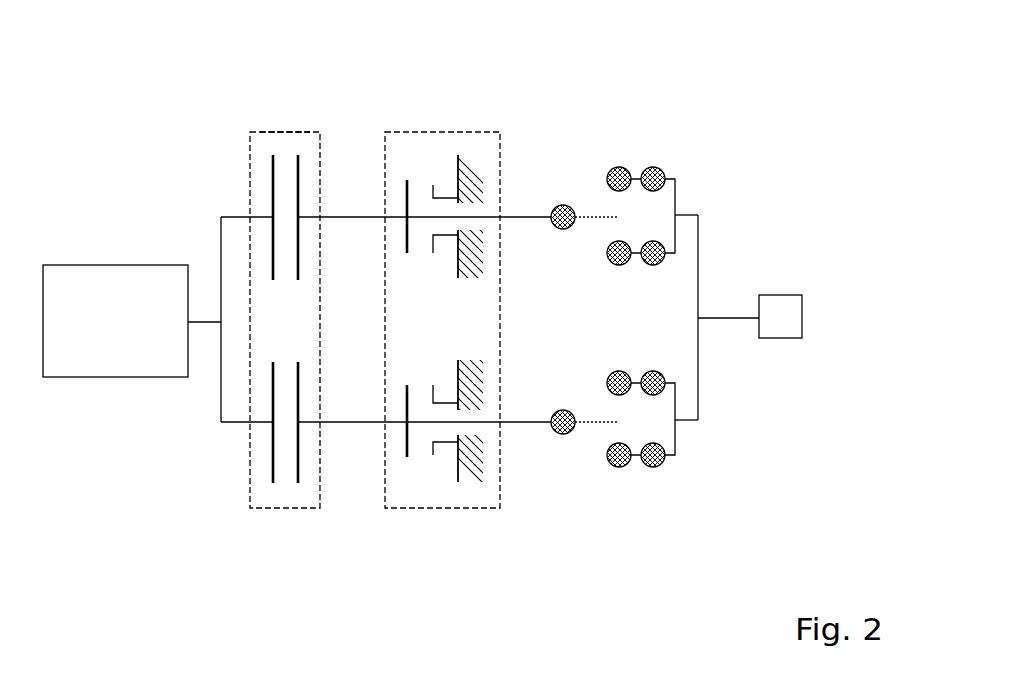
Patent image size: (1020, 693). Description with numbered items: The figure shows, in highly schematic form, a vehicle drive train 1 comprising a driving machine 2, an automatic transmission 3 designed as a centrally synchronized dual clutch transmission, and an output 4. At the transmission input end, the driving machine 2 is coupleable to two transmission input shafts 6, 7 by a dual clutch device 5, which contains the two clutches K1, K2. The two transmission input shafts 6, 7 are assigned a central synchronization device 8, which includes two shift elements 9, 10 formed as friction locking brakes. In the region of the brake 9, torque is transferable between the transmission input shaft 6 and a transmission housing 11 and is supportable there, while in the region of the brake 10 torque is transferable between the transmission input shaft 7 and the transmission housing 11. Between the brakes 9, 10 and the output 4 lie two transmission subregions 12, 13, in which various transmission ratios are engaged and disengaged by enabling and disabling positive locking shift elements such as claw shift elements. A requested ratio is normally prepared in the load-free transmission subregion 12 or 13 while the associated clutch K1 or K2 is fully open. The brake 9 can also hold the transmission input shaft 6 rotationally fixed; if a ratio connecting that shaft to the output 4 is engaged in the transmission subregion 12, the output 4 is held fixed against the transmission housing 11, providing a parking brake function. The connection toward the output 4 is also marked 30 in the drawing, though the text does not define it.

The vehicle drive train 1 is at (153, 142).
The driving machine 2 is at (128, 360).
The automatic transmission 3 is at (286, 520).
The clutch K1 is at (272, 192).
The clutch K2 is at (273, 450).
The output 4 is at (793, 320).
The dual clutch device 5 is at (293, 130).
The transmission input shaft 6 is at (352, 216).
The transmission input shaft 7 is at (350, 424).
The central synchronization device 8 is at (470, 130).
The brake 9 is at (433, 185).
The brake 10 is at (433, 453).
The transmission housing 11 is at (480, 162).
The transmission subregion 12 is at (685, 158).
The transmission subregion 13 is at (685, 477).
The output shaft 30 is at (718, 318).